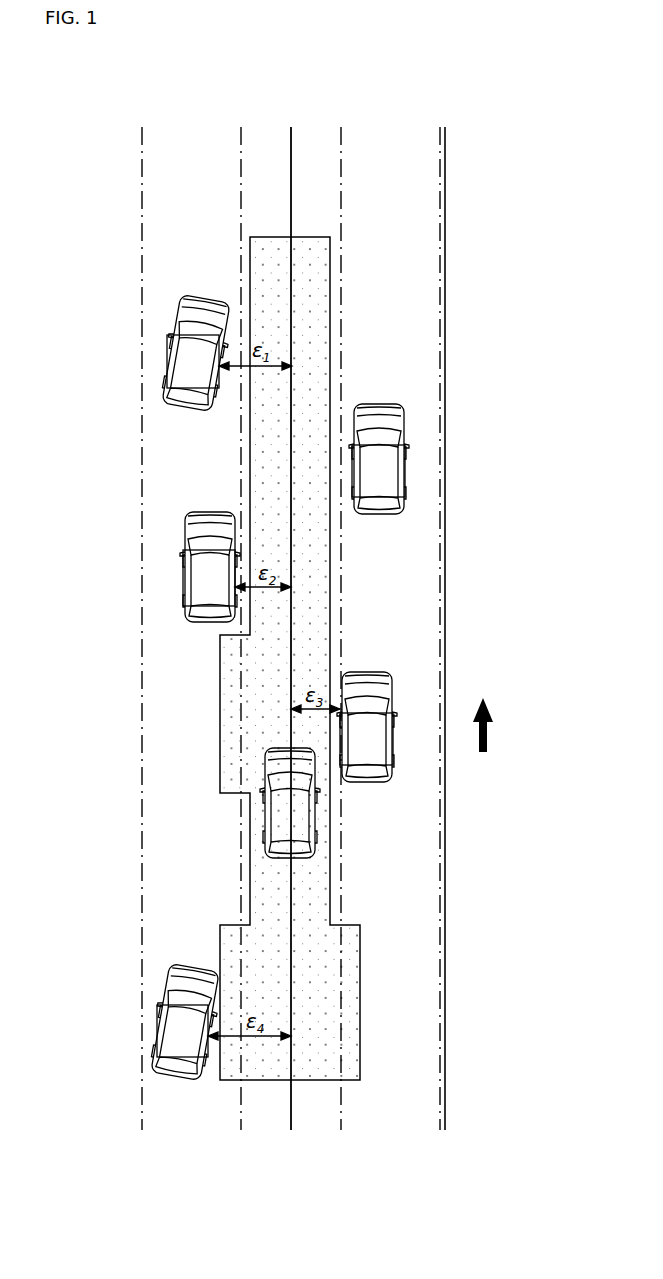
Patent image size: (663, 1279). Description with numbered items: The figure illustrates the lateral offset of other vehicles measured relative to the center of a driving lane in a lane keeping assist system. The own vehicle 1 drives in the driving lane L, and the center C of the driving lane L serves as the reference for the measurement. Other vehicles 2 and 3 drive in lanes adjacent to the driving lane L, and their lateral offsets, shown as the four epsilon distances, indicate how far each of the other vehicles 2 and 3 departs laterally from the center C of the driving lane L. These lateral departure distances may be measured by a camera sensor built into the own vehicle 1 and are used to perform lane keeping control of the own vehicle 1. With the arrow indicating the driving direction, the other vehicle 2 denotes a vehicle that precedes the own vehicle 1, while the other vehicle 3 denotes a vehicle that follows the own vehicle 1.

The own vehicle 1 is at (307, 832).
The other vehicle 2 is at (200, 312).
The other vehicle 3 is at (178, 1070).
The driving lane L is at (241, 177).
The center of the driving lane C is at (291, 177).